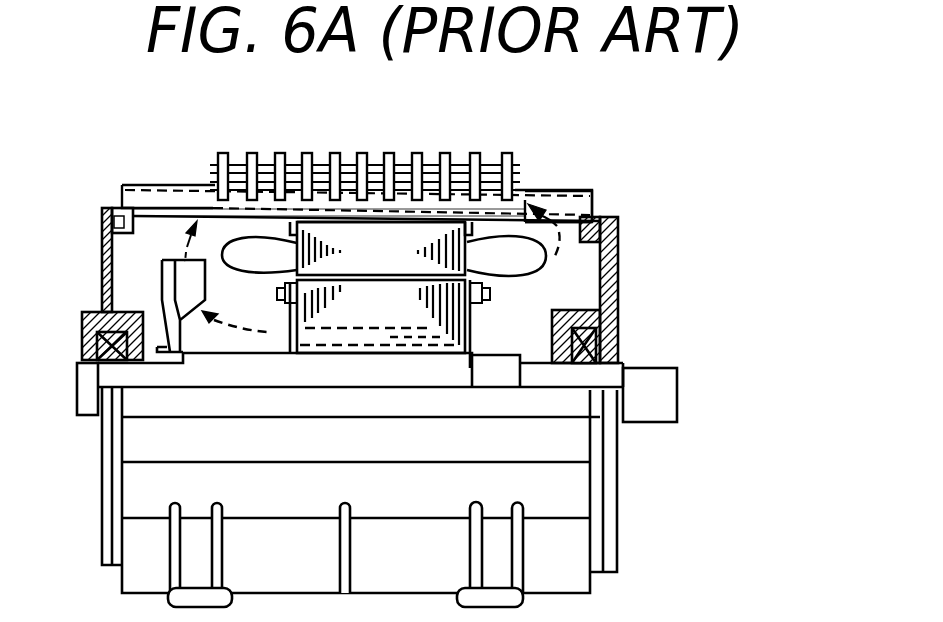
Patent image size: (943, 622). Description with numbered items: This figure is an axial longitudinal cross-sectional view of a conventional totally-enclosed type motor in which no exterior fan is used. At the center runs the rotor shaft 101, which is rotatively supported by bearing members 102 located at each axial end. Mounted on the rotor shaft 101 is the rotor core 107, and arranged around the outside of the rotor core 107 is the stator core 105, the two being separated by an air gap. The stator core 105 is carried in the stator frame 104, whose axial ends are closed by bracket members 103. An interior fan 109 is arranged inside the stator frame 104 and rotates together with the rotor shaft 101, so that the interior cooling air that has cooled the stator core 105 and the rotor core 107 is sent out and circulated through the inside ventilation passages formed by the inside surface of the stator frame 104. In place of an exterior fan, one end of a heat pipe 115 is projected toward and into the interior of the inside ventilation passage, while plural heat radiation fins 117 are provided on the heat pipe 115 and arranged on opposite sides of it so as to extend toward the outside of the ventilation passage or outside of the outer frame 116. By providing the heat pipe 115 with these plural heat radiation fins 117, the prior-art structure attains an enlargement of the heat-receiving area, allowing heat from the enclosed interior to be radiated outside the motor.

The rotor shaft 101 is at (655, 368).
The bearing member 102 is at (82, 340).
The bracket member 103 is at (103, 208).
The stator frame 104 is at (494, 207).
The stator core 105 is at (402, 210).
The rotor core 107 is at (367, 297).
The interior fan 109 is at (209, 290).
The heat pipe 115 is at (508, 158).
The outer frame 116 is at (578, 191).
The heat radiation fin 117 is at (518, 168).